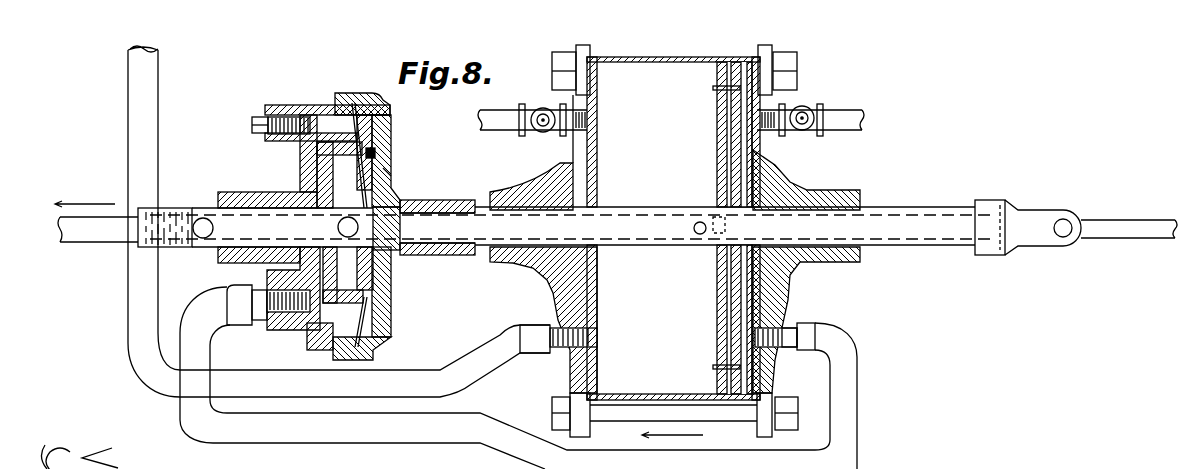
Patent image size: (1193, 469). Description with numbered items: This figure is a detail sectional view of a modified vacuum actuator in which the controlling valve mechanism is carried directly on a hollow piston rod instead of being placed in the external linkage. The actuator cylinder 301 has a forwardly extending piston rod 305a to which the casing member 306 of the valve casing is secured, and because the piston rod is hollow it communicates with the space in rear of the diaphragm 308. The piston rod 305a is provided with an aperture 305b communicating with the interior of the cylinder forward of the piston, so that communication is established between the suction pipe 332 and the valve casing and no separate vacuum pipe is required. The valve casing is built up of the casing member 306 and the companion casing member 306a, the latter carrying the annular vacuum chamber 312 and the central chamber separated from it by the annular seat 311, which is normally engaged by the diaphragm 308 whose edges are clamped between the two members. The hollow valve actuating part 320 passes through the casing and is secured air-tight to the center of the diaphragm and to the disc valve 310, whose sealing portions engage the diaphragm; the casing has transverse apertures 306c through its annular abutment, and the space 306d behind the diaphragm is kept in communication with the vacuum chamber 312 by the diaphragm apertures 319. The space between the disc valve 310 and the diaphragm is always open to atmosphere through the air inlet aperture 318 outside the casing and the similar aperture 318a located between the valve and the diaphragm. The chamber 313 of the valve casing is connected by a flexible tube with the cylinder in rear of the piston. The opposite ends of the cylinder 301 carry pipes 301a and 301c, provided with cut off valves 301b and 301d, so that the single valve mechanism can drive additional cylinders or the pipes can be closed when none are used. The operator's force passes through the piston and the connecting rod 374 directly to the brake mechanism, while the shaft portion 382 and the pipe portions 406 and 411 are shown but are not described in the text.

The actuator cylinder 301 is at (685, 52).
The pipe 301a is at (495, 118).
The cut off valve 301b is at (538, 132).
The pipe 301c is at (852, 120).
The cut off valve 301d is at (806, 108).
The piston rod 305a is at (517, 232).
The aperture 305b is at (697, 235).
The casing member 306 is at (385, 104).
The casing member 306a is at (293, 106).
The transverse apertures 306c is at (389, 172).
The space 306d is at (377, 151).
The diaphragm 308 is at (385, 280).
The disc valve 310 is at (267, 277).
The annular seat 311 is at (375, 133).
The annular vacuum chamber 312 is at (322, 142).
The chamber 313 is at (305, 166).
The air inlet aperture 318 is at (200, 216).
The aperture 318a is at (357, 220).
The apertures 319 is at (370, 323).
The valve actuating part 320 is at (185, 247).
The suction pipe 332 is at (470, 358).
The connecting rod 374 is at (1120, 230).
The shaft 382 is at (105, 234).
The pipe 406 is at (571, 378).
The pipe 411 is at (772, 462).